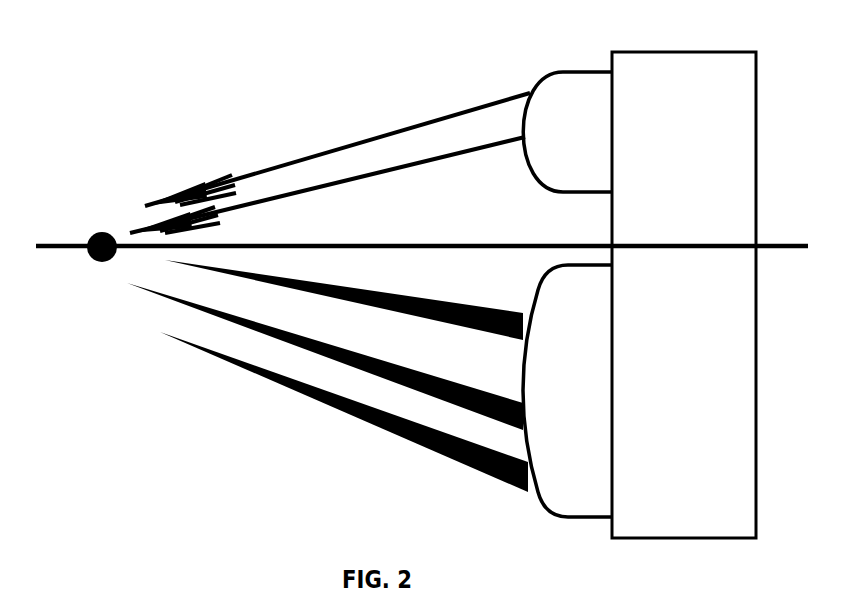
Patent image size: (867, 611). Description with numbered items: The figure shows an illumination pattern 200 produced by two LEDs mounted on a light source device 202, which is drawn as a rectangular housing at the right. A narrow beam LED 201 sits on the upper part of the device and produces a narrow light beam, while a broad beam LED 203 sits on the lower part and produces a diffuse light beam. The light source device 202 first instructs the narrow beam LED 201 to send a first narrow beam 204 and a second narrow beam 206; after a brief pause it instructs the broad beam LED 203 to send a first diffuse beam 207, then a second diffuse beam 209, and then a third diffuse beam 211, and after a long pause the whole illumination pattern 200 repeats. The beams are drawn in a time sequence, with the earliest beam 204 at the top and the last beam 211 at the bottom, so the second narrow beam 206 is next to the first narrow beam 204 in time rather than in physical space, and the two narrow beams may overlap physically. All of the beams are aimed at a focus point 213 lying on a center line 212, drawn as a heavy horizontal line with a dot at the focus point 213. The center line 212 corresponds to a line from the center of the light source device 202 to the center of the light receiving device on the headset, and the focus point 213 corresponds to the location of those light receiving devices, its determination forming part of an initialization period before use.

The illumination pattern 200 is at (160, 106).
The narrow beam LED 201 is at (547, 143).
The light source device 202 is at (667, 368).
The broad beam LED 203 is at (548, 404).
The first narrow beam 204 is at (485, 105).
The second narrow beam 206 is at (487, 150).
The first diffuse beam 207 is at (488, 307).
The second diffuse beam 209 is at (460, 383).
The third diffuse beam 211 is at (490, 478).
The center line 212 is at (331, 243).
The focus point 213 is at (96, 232).